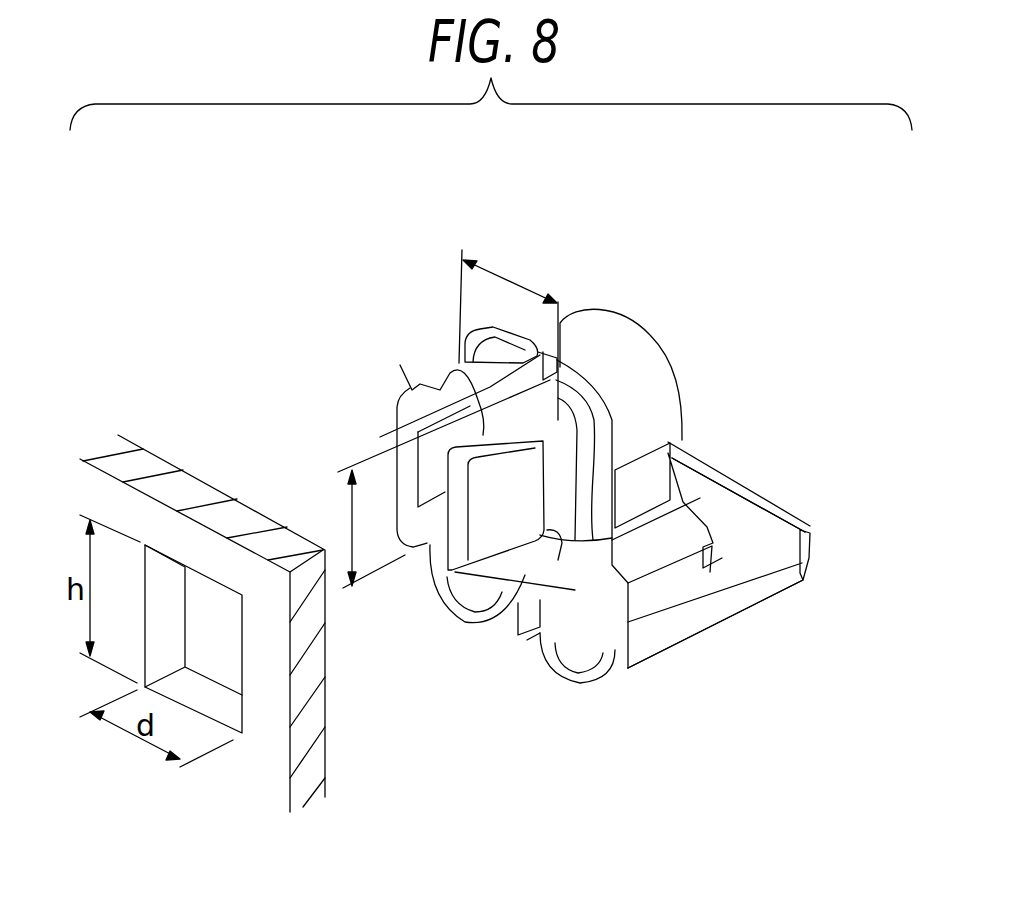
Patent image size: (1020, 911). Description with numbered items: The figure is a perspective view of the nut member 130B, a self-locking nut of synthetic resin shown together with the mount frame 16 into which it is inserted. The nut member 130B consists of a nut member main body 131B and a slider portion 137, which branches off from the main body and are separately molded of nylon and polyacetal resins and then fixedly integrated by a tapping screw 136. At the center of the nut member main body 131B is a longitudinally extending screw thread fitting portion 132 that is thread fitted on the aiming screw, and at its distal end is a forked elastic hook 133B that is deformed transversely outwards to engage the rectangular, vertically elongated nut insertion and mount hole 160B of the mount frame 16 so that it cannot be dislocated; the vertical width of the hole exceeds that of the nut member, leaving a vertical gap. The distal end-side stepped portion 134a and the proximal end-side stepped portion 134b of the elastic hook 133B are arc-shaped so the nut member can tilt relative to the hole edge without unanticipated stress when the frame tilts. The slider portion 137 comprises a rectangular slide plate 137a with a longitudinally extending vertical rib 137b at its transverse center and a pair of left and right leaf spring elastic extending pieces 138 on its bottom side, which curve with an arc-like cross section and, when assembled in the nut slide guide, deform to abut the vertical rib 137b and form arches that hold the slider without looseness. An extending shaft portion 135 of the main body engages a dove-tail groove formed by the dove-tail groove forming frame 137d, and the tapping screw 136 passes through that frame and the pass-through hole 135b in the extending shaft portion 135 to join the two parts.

The mount frame 16 is at (320, 762).
The nut insertion and mount hole 160B is at (207, 592).
The nut member 130B is at (533, 182).
The nut member main body 131B is at (572, 298).
The screw thread fitting portion 132 is at (422, 480).
The elastic hook 133B is at (400, 365).
The distal end-side stepped portion 134a is at (590, 440).
The proximal end-side stepped portion 134b is at (610, 437).
The extending shaft portion 135 is at (653, 482).
The pass-through hole 135b is at (553, 585).
The tapping screw 136 is at (490, 627).
The slider portion 137 is at (428, 582).
The slide plate 137a is at (760, 597).
The vertical rib 137b is at (527, 640).
The dove-tail groove forming frame 137d is at (683, 522).
The elastic extending piece 138 is at (455, 613).